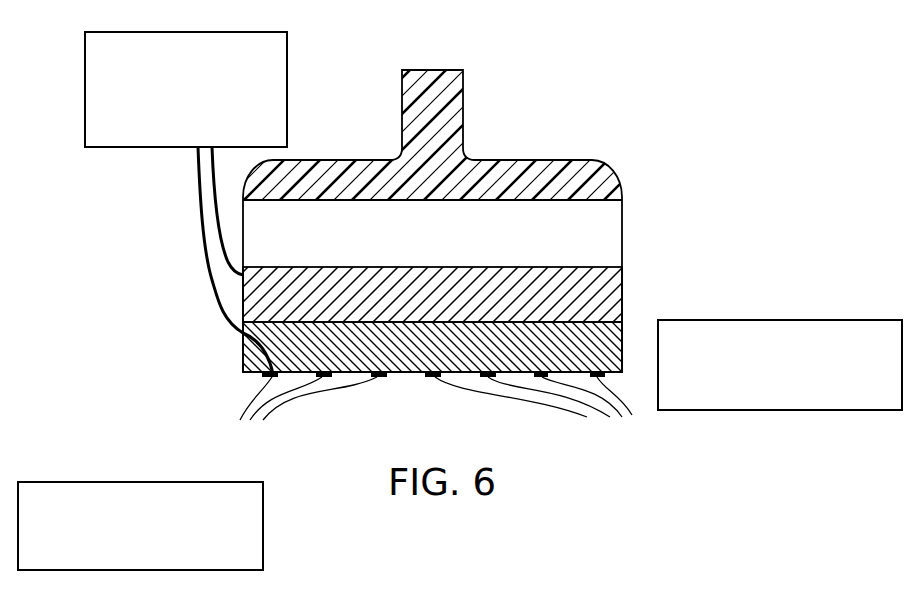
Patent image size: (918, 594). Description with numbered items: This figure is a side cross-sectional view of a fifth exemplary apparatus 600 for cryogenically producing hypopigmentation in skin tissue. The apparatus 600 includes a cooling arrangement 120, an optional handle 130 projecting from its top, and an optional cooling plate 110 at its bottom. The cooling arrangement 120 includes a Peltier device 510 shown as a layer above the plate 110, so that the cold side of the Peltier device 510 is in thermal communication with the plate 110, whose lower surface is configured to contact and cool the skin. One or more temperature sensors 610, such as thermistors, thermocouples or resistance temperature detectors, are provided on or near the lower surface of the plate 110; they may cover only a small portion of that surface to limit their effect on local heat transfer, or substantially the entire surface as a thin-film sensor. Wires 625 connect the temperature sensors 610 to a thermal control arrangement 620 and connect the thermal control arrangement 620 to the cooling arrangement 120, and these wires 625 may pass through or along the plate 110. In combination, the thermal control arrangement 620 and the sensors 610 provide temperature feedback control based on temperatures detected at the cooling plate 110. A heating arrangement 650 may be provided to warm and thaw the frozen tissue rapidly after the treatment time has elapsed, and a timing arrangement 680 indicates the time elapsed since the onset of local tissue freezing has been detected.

The apparatus 600 is at (627, 115).
The cooling arrangement 120 is at (602, 235).
The handle 130 is at (408, 72).
The Peltier device 510 is at (410, 272).
The cooling plate 110 is at (242, 350).
The temperature sensors 610 is at (436, 412).
The thermal control arrangement 620 is at (160, 147).
The wires 625 is at (205, 228).
The heating arrangement 650 is at (793, 410).
The timing arrangement 680 is at (140, 511).